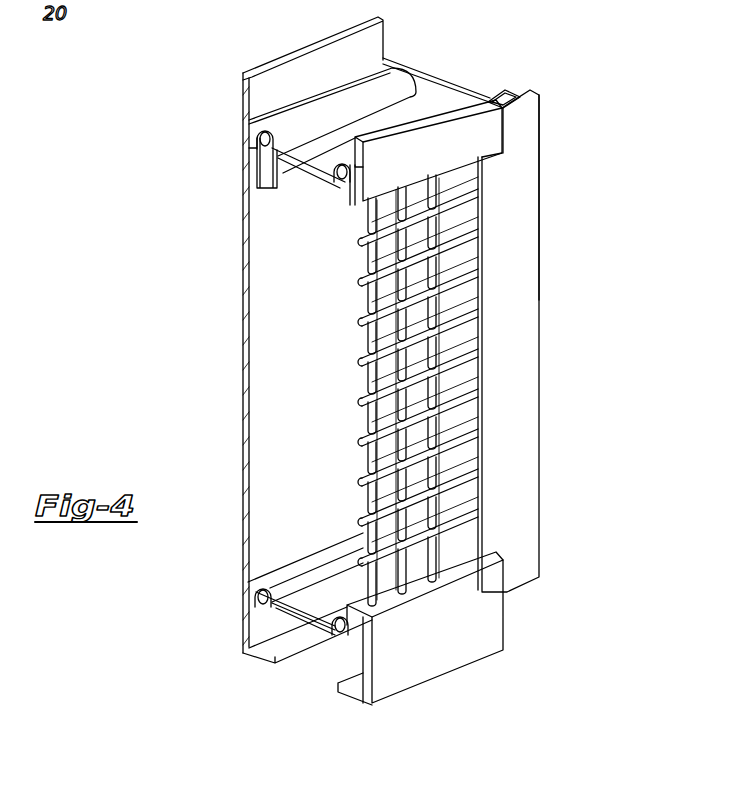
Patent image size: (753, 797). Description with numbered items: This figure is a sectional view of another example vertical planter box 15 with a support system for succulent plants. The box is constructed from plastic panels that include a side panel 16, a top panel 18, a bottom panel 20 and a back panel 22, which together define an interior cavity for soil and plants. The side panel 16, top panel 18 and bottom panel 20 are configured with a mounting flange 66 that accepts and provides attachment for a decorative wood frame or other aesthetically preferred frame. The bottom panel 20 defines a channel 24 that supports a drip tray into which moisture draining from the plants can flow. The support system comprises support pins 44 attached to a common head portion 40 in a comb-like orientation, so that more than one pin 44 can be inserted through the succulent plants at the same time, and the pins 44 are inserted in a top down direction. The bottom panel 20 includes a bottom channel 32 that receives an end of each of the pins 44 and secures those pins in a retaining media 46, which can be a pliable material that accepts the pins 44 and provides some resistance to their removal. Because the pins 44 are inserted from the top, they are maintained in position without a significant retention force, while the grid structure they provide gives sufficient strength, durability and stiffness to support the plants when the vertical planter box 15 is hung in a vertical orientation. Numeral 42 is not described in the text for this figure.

The vertical planter box 15 is at (613, 99).
The side panel 16 is at (518, 493).
The top panel 18 is at (270, 170).
The bottom panel 20 is at (325, 598).
The back panel 22 is at (290, 392).
The channel 24 is at (275, 620).
The bottom channel 32 is at (352, 186).
The common head portion 40 is at (432, 118).
The vertical grid rods 42 is at (368, 340).
The support pins 44 is at (463, 398).
The retaining media 46 is at (470, 570).
The mounting flange 66 is at (512, 185).